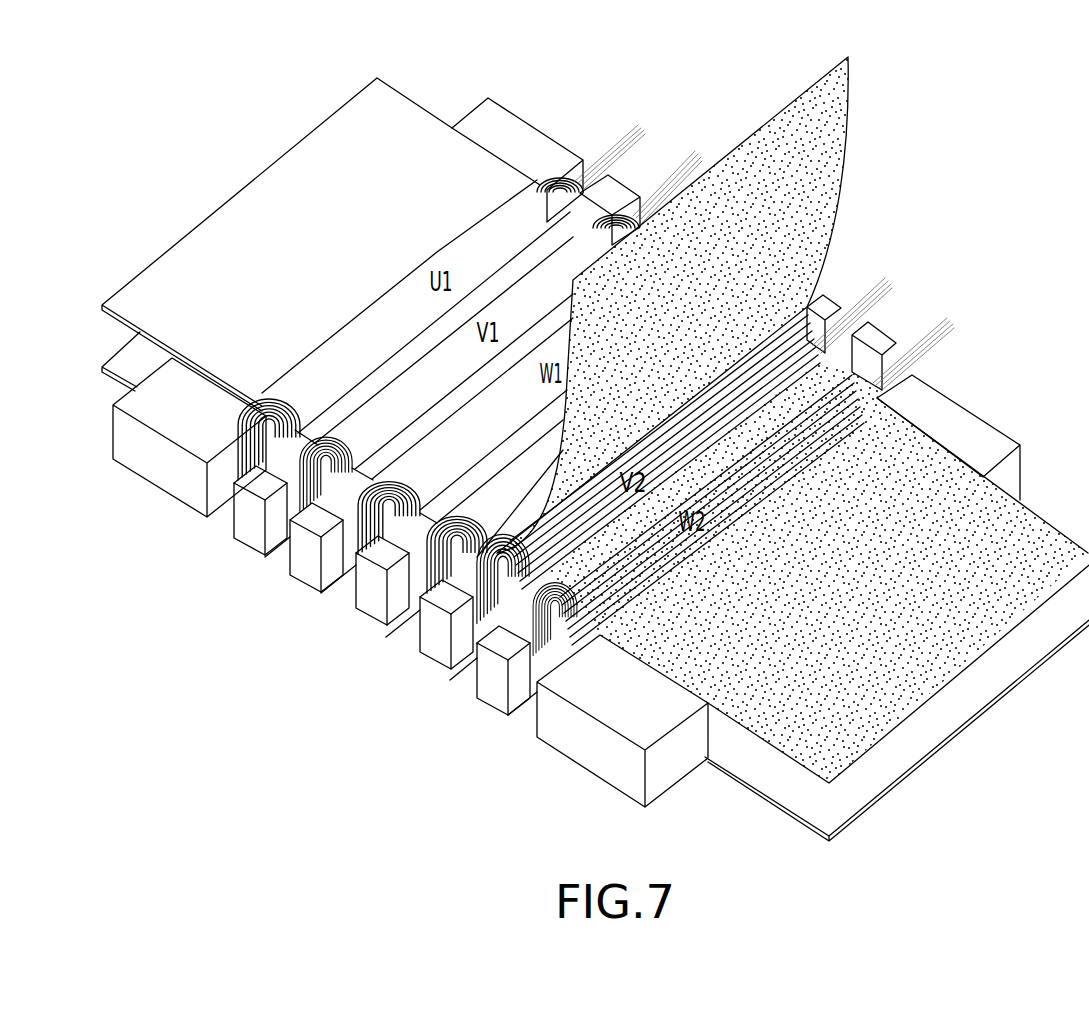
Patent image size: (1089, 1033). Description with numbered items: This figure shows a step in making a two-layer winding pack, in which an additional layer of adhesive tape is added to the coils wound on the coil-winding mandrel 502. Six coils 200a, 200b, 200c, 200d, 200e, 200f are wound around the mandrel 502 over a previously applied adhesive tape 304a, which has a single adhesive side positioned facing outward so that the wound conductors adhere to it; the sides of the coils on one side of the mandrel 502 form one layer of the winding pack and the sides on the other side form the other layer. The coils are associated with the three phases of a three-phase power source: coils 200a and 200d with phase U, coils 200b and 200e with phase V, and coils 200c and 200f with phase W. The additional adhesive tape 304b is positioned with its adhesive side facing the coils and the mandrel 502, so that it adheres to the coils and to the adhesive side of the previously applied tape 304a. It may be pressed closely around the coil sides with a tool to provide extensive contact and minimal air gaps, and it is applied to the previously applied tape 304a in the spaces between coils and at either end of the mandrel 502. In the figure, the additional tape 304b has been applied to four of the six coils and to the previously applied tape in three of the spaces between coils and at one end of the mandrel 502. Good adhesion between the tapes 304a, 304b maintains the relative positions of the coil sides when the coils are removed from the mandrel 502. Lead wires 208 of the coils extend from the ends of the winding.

The coil U1 200a is at (240, 493).
The coil V1 200b is at (290, 535).
The coil W1 200c is at (355, 567).
The coil U2 200d is at (418, 615).
The coil V2 200e is at (470, 660).
The coil W2 200f is at (537, 684).
The coil lead wires 208 is at (764, 221).
The previously applied adhesive tape 304a is at (818, 610).
The additional adhesive tape 304b is at (370, 267).
The coil-winding mandrel 502 is at (990, 420).